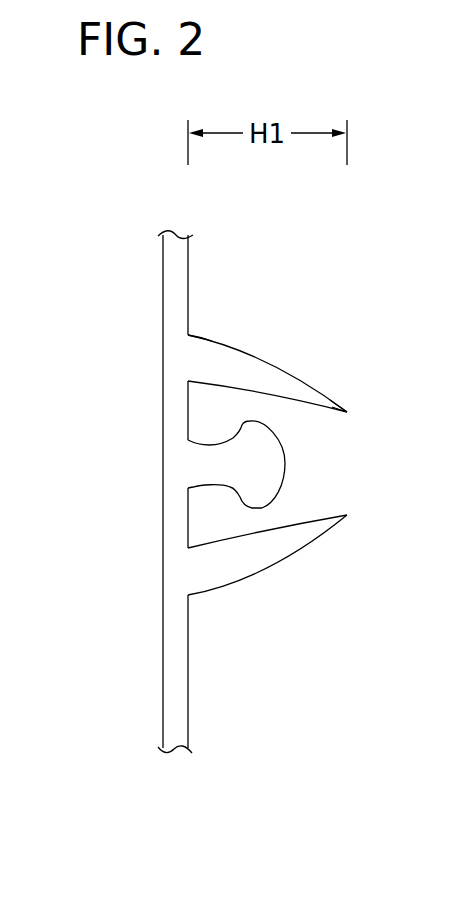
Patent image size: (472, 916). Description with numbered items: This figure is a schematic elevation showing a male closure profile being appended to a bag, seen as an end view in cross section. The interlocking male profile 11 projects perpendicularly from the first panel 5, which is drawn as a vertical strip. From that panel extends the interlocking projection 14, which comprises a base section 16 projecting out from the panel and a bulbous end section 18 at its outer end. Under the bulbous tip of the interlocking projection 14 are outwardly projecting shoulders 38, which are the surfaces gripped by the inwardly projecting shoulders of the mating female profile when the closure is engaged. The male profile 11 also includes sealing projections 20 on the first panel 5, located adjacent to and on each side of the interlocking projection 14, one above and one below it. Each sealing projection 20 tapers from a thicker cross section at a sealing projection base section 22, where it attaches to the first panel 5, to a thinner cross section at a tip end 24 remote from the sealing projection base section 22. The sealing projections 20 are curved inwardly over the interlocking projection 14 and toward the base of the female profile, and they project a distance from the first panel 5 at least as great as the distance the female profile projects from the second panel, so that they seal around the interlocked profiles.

The first panel 5 is at (163, 698).
The interlocking male profile 11 is at (76, 555).
The interlocking projection 14 is at (235, 438).
The base section 16 is at (195, 488).
The bulbous end section 18 is at (285, 442).
The sealing projections 20 is at (277, 356).
The sealing projection base section 22 is at (197, 335).
The tip end 24 is at (344, 410).
The outwardly projecting shoulders 38 is at (263, 508).